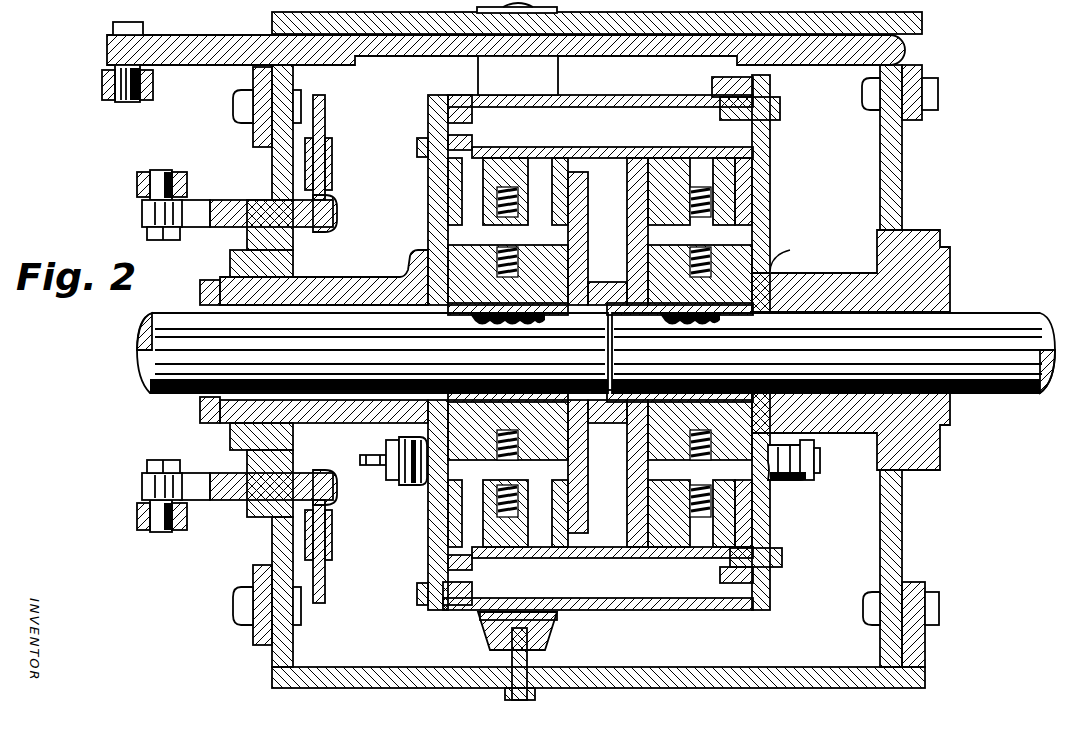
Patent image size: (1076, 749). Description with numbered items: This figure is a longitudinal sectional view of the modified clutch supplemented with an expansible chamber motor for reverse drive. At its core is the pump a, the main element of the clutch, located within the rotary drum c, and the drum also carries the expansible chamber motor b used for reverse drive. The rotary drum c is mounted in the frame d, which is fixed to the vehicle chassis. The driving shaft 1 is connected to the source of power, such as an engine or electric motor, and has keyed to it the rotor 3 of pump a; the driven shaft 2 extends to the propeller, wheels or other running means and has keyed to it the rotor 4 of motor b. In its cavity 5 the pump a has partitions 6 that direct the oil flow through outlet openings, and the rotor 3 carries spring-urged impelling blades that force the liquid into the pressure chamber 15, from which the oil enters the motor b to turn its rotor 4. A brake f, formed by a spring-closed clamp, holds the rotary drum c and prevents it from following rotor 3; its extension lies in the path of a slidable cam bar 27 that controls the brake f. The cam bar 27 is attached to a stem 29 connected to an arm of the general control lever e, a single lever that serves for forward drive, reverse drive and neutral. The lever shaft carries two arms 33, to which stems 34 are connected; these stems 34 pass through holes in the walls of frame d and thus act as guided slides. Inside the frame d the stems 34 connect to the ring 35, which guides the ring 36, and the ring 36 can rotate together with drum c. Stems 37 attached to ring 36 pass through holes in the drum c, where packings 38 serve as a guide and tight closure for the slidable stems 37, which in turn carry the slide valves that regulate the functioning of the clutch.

The driving shaft 1 is at (995, 313).
The driven shaft 2 is at (154, 312).
The rotor 3 is at (770, 243).
The rotor 4 is at (430, 213).
The cavity 5 is at (697, 150).
The partitions 6 is at (507, 165).
The pressure chamber 15 is at (583, 133).
The cam bar 27 is at (650, 52).
The stem 29 is at (168, 38).
The arms 33 is at (137, 197).
The stems 34 is at (230, 200).
The ring 35 is at (335, 198).
The ring 36 is at (326, 116).
The stems 37 is at (370, 468).
The packings 38 is at (400, 484).
The pump a is at (752, 175).
The expansible chamber motor b is at (470, 190).
The rotary drum c is at (410, 255).
The frame d is at (272, 20).
The control lever e is at (115, 100).
The brake f is at (473, 637).